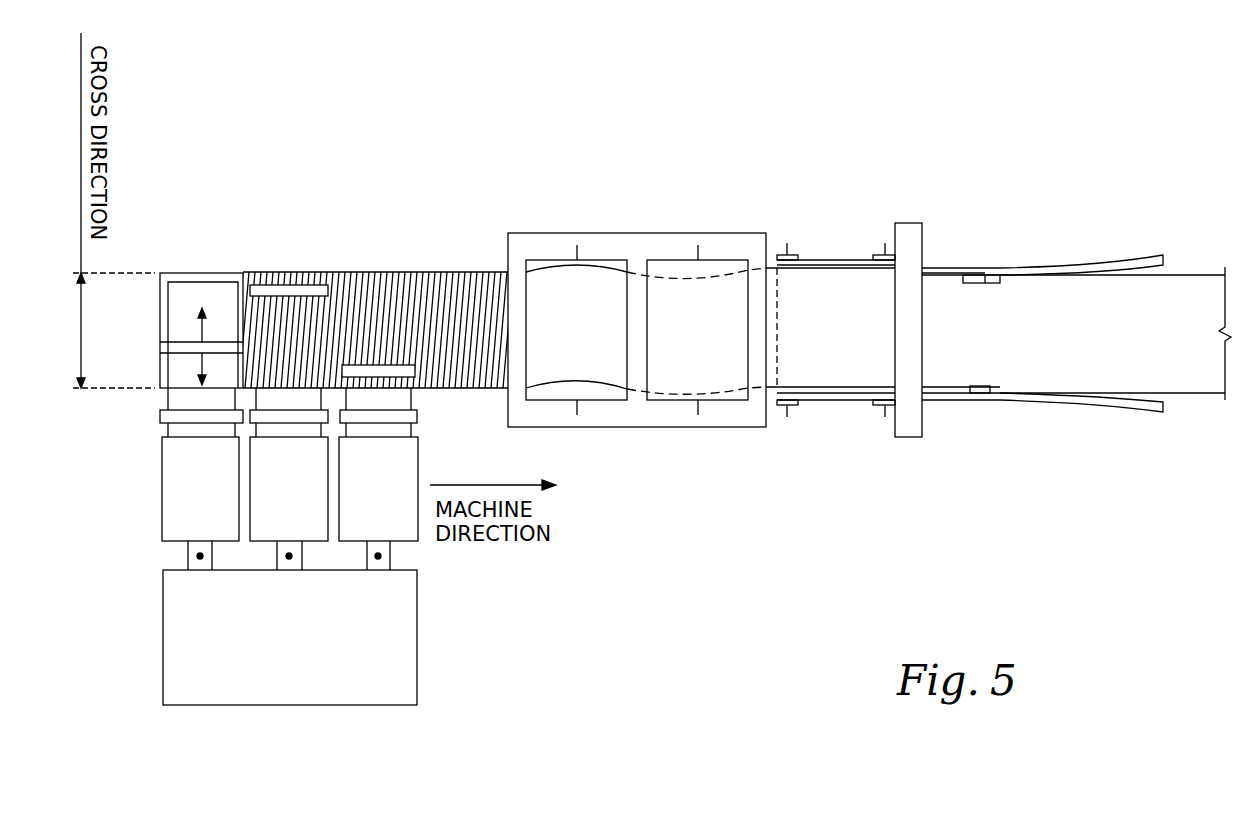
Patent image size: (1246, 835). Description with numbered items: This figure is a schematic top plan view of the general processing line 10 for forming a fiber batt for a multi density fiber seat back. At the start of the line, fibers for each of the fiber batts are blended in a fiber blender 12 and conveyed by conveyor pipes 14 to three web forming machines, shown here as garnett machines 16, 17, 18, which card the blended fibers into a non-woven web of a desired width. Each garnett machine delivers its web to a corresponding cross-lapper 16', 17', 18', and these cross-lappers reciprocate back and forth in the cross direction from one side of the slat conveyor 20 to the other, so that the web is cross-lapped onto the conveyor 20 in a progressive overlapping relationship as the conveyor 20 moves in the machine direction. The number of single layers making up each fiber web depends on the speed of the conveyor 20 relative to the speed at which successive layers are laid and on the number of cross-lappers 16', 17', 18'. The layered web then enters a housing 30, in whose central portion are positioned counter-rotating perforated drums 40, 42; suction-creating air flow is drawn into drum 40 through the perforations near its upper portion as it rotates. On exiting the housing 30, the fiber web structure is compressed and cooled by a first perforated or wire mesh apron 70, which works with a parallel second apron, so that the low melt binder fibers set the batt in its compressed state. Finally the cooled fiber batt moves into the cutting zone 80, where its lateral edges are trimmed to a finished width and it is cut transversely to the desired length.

The processing line 10 is at (1070, 157).
The fiber blender 12 is at (417, 642).
The conveyor pipes 14 is at (215, 560).
The garnett machine 16 is at (201, 464).
The garnett machine 17 is at (289, 464).
The garnett machine 18 is at (378, 464).
The cross-lapper 16' is at (175, 330).
The cross-lapper 17' is at (289, 259).
The cross-lapper 18' is at (408, 399).
The slat conveyor 20 is at (377, 270).
The housing 30 is at (723, 233).
The drum 40 is at (563, 390).
The drum 42 is at (745, 390).
The first apron 70 is at (837, 365).
The cutting zone 80 is at (1113, 260).